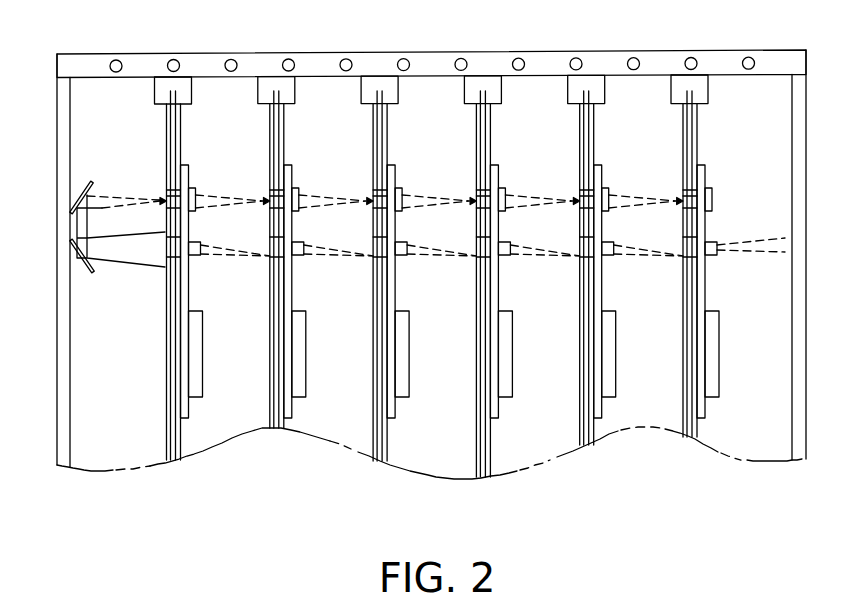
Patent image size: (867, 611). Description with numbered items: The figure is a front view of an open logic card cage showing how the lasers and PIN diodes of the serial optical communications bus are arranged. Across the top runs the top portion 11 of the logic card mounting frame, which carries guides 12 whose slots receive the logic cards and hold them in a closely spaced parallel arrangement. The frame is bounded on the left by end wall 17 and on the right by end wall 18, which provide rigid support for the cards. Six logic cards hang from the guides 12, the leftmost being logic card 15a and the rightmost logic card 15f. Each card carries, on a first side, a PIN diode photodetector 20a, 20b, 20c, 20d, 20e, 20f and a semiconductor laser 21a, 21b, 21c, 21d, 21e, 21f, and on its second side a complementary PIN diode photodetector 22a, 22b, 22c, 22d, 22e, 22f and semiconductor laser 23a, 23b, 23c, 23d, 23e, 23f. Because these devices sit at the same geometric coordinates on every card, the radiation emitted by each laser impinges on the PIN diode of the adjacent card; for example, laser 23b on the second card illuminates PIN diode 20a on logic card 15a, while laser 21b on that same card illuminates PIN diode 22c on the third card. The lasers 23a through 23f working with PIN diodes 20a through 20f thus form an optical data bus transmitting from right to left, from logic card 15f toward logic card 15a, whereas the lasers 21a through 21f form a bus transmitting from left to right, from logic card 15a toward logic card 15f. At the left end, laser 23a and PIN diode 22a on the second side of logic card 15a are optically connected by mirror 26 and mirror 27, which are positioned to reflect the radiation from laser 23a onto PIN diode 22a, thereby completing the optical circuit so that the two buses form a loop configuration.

The top portion 11 is at (430, 51).
The guides 12 is at (257, 97).
The logic card 15a is at (167, 428).
The logic card 15f is at (700, 430).
The end wall 17 is at (71, 110).
The end wall 18 is at (790, 178).
The PIN diode photodetector 20a is at (196, 190).
The PIN diode photodetector 20b is at (299, 190).
The PIN diode photodetector 20c is at (402, 190).
The PIN diode photodetector 20d is at (505, 190).
The PIN diode photodetector 20e is at (609, 190).
The PIN diode photodetector 20f is at (712, 190).
The semiconductor laser 21a is at (202, 246).
The semiconductor laser 21b is at (305, 246).
The semiconductor laser 21c is at (408, 246).
The semiconductor laser 21d is at (511, 246).
The semiconductor laser 21e is at (615, 246).
The semiconductor laser 21f is at (718, 246).
The PIN diode photodetector 22a is at (166, 262).
The PIN diode photodetector 22b is at (270, 262).
The PIN diode photodetector 22c is at (373, 262).
The PIN diode photodetector 22d is at (476, 262).
The PIN diode photodetector 22e is at (580, 262).
The PIN diode photodetector 22f is at (683, 262).
The semiconductor laser 23a is at (165, 198).
The semiconductor laser 23b is at (268, 198).
The semiconductor laser 23c is at (372, 198).
The semiconductor laser 23d is at (475, 198).
The semiconductor laser 23e is at (578, 198).
The semiconductor laser 23f is at (681, 198).
The mirror 26 is at (90, 177).
The mirror 27 is at (92, 274).